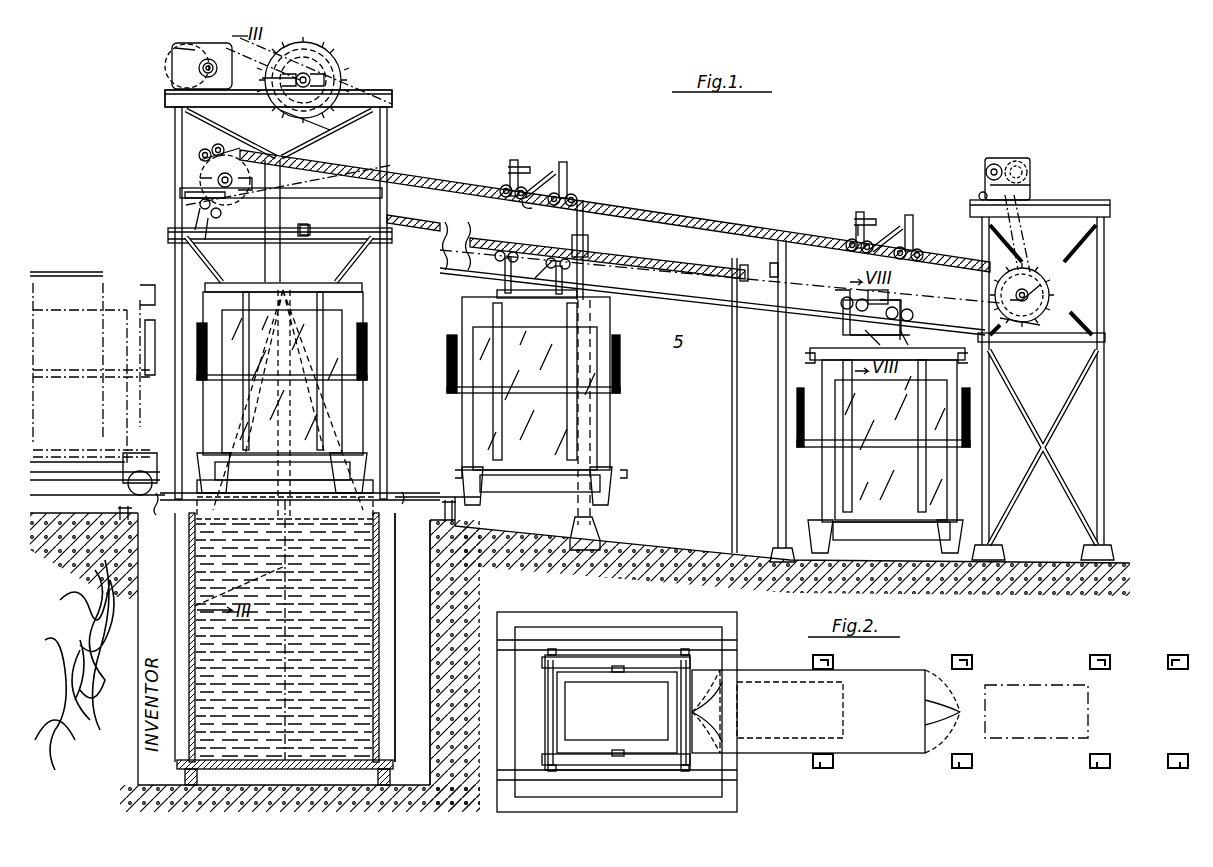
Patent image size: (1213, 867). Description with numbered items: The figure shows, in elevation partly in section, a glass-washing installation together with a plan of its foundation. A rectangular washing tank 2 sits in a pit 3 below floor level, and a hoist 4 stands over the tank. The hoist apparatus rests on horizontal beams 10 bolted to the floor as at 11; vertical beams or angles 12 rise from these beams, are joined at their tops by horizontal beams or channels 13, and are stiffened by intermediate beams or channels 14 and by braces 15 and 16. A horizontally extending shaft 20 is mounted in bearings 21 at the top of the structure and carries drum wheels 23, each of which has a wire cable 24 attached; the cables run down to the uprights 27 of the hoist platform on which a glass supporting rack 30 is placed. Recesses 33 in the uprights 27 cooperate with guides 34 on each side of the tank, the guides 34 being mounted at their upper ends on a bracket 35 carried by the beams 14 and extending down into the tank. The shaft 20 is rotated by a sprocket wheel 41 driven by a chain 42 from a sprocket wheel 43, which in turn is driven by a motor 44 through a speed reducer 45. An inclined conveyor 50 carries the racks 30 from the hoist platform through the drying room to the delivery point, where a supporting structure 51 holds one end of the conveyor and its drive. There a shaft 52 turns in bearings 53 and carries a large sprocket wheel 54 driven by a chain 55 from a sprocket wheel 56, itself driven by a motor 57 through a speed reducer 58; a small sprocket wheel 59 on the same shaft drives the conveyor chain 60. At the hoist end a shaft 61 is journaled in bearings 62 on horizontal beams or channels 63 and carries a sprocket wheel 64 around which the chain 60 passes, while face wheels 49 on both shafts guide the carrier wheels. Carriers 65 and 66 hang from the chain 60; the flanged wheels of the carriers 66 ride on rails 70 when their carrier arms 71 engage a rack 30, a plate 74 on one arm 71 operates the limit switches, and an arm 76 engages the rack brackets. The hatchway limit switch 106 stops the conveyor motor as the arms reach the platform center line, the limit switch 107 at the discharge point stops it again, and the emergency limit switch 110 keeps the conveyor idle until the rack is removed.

In FIG. 1, the washing tank 2 is at (380, 594).
In FIG. 1, the pit 3 is at (412, 649).
In FIG. 1, the hoist 4 is at (410, 144).
In FIG. 1, the beams 10 is at (412, 497).
In FIG. 1, the bolts 11 is at (158, 524).
In FIG. 1, the vertically extending beams or angles 12 is at (175, 268).
In FIG. 1, the horizontally extending beams or channels 13 is at (165, 98).
In FIG. 1, the beams or channels 14 is at (168, 242).
In FIG. 1, the braces 15 is at (212, 262).
In FIG. 1, the braces 16 is at (258, 140).
In FIG. 1, the horizontally extending shaft 20 is at (296, 72).
In FIG. 1, the bearings 21 is at (312, 78).
In FIG. 1, the drum wheels 23 is at (308, 116).
In FIG. 1, the wire cable 24 is at (252, 122).
In FIG. 2, the uprights 27 is at (620, 670).
In FIG. 1, the glass supporting rack 30 is at (355, 419).
In FIG. 2, the recesses 33 is at (618, 672).
In FIG. 1, the guides 34 is at (192, 610).
In FIG. 2, the guides 34 is at (618, 757).
In FIG. 1, the bracket 35 is at (281, 197).
In FIG. 1, the sprocket wheel 41 is at (300, 52).
In FIG. 1, the chain 42 is at (230, 48).
In FIG. 1, the sprocket wheel 43 is at (208, 58).
In FIG. 1, the motor 44 is at (180, 50).
In FIG. 1, the speed reducer 45 is at (172, 60).
In FIG. 1, the face wheels 49 is at (210, 168).
In FIG. 1, the conveyor 50 is at (683, 220).
In FIG. 1, the supporting structure 51 is at (1042, 380).
In FIG. 1, the shaft 52 is at (1044, 287).
In FIG. 1, the bearings 53 is at (1035, 293).
In FIG. 1, the large sprocket wheel 54 is at (1034, 258).
In FIG. 1, the chain 55 is at (1030, 240).
In FIG. 1, the sprocket wheel 56 is at (986, 173).
In FIG. 1, the motor 57 is at (1027, 173).
In FIG. 1, the speed reducer 58 is at (1005, 162).
In FIG. 1, the small sprocket wheel 59 is at (1027, 340).
In FIG. 1, the conveyor chain 60 is at (845, 306).
In FIG. 1, the shaft 61 is at (218, 172).
In FIG. 1, the bearings 62 is at (205, 162).
In FIG. 1, the horizontally extending beams or channels 63 is at (200, 191).
In FIG. 1, the sprocket wheel 64 is at (216, 222).
In FIG. 1, the carriers 65 is at (578, 199).
In FIG. 1, the carriers 66 is at (503, 185).
In FIG. 1, the rails 70 is at (779, 302).
In FIG. 1, the carrier arms 71 is at (856, 226).
In FIG. 1, the plate 74 is at (515, 164).
In FIG. 1, the arm 76 is at (548, 172).
In FIG. 1, the hatchway limit switch 106 is at (302, 236).
In FIG. 1, the limit switch 107 is at (908, 340).
In FIG. 1, the emergency limit switch 110 is at (893, 306).